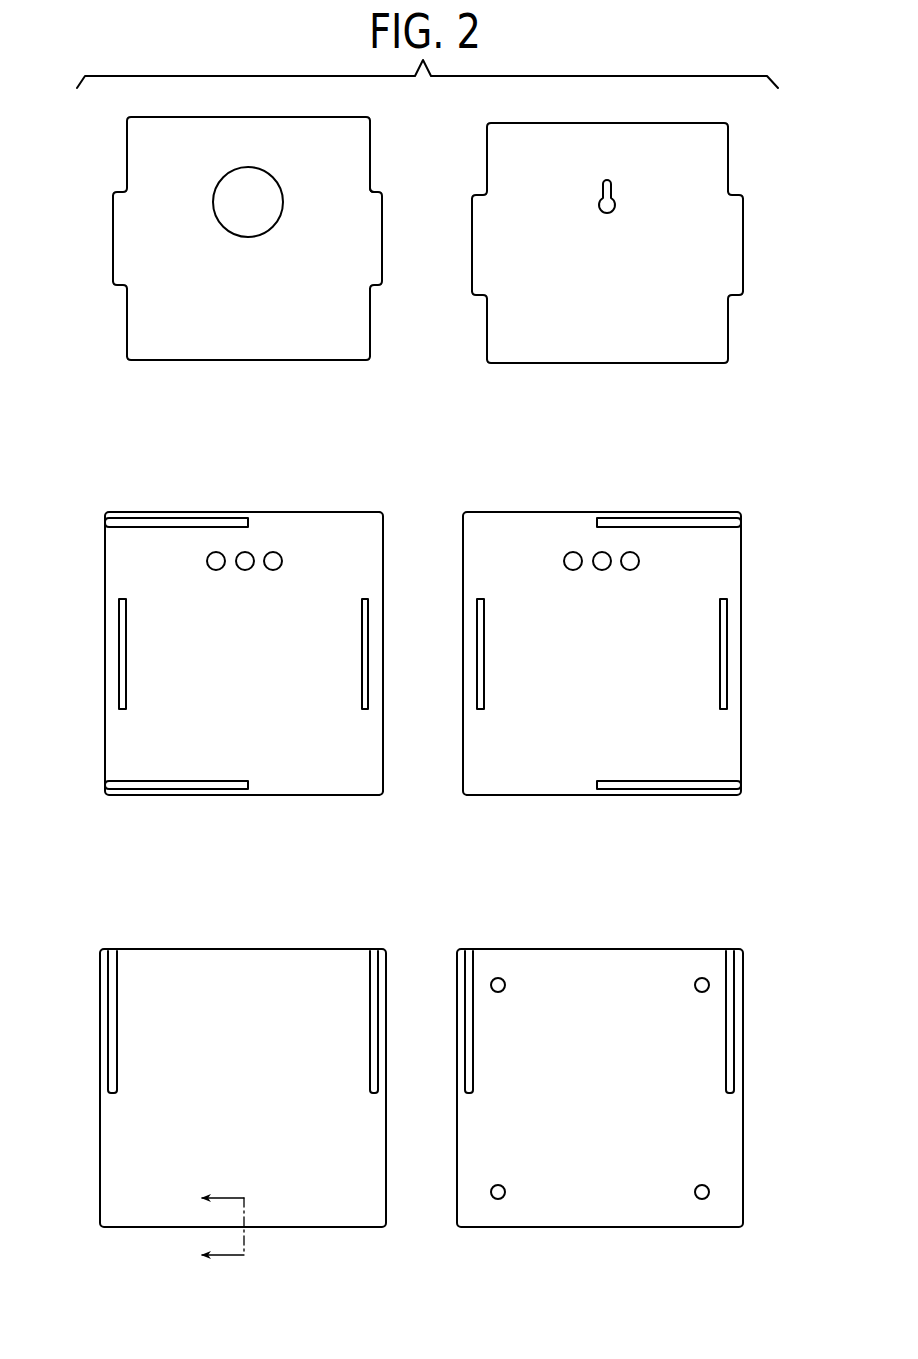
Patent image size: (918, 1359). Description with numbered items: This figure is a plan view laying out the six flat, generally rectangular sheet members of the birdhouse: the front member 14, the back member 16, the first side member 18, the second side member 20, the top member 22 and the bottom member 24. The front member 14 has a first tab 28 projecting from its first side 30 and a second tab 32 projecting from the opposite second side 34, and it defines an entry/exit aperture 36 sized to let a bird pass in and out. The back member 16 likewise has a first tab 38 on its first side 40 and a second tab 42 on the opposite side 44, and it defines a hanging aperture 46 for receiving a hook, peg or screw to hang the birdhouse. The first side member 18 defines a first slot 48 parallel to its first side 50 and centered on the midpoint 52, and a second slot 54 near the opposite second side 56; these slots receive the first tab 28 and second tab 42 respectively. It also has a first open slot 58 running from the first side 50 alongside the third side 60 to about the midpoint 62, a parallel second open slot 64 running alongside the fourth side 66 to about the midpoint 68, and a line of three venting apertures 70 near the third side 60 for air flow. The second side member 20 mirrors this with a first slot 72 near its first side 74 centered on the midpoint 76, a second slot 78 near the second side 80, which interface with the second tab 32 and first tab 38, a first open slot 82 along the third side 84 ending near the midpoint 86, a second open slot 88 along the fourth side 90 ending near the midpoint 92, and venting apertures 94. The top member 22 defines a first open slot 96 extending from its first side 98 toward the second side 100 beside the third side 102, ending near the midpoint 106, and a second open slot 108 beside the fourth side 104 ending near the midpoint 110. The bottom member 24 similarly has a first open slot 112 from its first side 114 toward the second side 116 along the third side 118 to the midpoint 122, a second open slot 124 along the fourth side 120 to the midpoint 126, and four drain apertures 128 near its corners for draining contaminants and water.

The front member 14 is at (110, 327).
The back member 16 is at (740, 327).
The first side member 18 is at (168, 807).
The second side member 20 is at (677, 807).
The top member 22 is at (153, 1238).
The bottom member 24 is at (510, 1238).
The first tab 28 is at (122, 245).
The first side 30 is at (125, 310).
The second tab 32 is at (375, 197).
The second side 34 is at (372, 322).
The entry/exit aperture 36 is at (230, 185).
The first tab 38 is at (477, 275).
The first side 40 is at (485, 333).
The second tab 42 is at (737, 230).
The opposite side 44 is at (730, 142).
The hanging aperture 46 is at (615, 203).
The first slot 48 is at (122, 642).
The first side 50 is at (105, 593).
The midpoint 52 is at (105, 655).
The second slot 54 is at (365, 608).
The second side 56 is at (383, 767).
The first open slot 58 is at (108, 525).
The third side 60 is at (338, 508).
The midpoint 62 is at (243, 512).
The second open slot 64 is at (107, 783).
The fourth side 66 is at (315, 797).
The midpoint 68 is at (242, 797).
The venting apertures 70 is at (220, 558).
The first slot 72 is at (725, 642).
The first side 74 is at (743, 593).
The midpoint 76 is at (743, 655).
The second slot 78 is at (478, 698).
The second side 80 is at (462, 595).
The first open slot 82 is at (733, 525).
The third side 84 is at (682, 508).
The midpoint 86 is at (603, 511).
The second open slot 88 is at (733, 783).
The fourth side 90 is at (512, 798).
The midpoint 92 is at (602, 797).
The venting apertures 94 is at (626, 558).
The first open slot 96 is at (115, 955).
The first side 98 is at (180, 948).
The second side 100 is at (318, 1227).
The third side 102 is at (100, 1152).
The fourth side 104 is at (387, 1205).
The midpoint 106 is at (100, 1088).
The second open slot 108 is at (373, 955).
The midpoint 110 is at (387, 1088).
The first open slot 112 is at (470, 955).
The first side 114 is at (555, 948).
The second side 116 is at (673, 1227).
The third side 118 is at (457, 1027).
The fourth side 120 is at (743, 1152).
The midpoint 122 is at (457, 1088).
The second open slot 124 is at (730, 955).
The midpoint 126 is at (743, 1088).
The drain apertures 128 is at (500, 980).